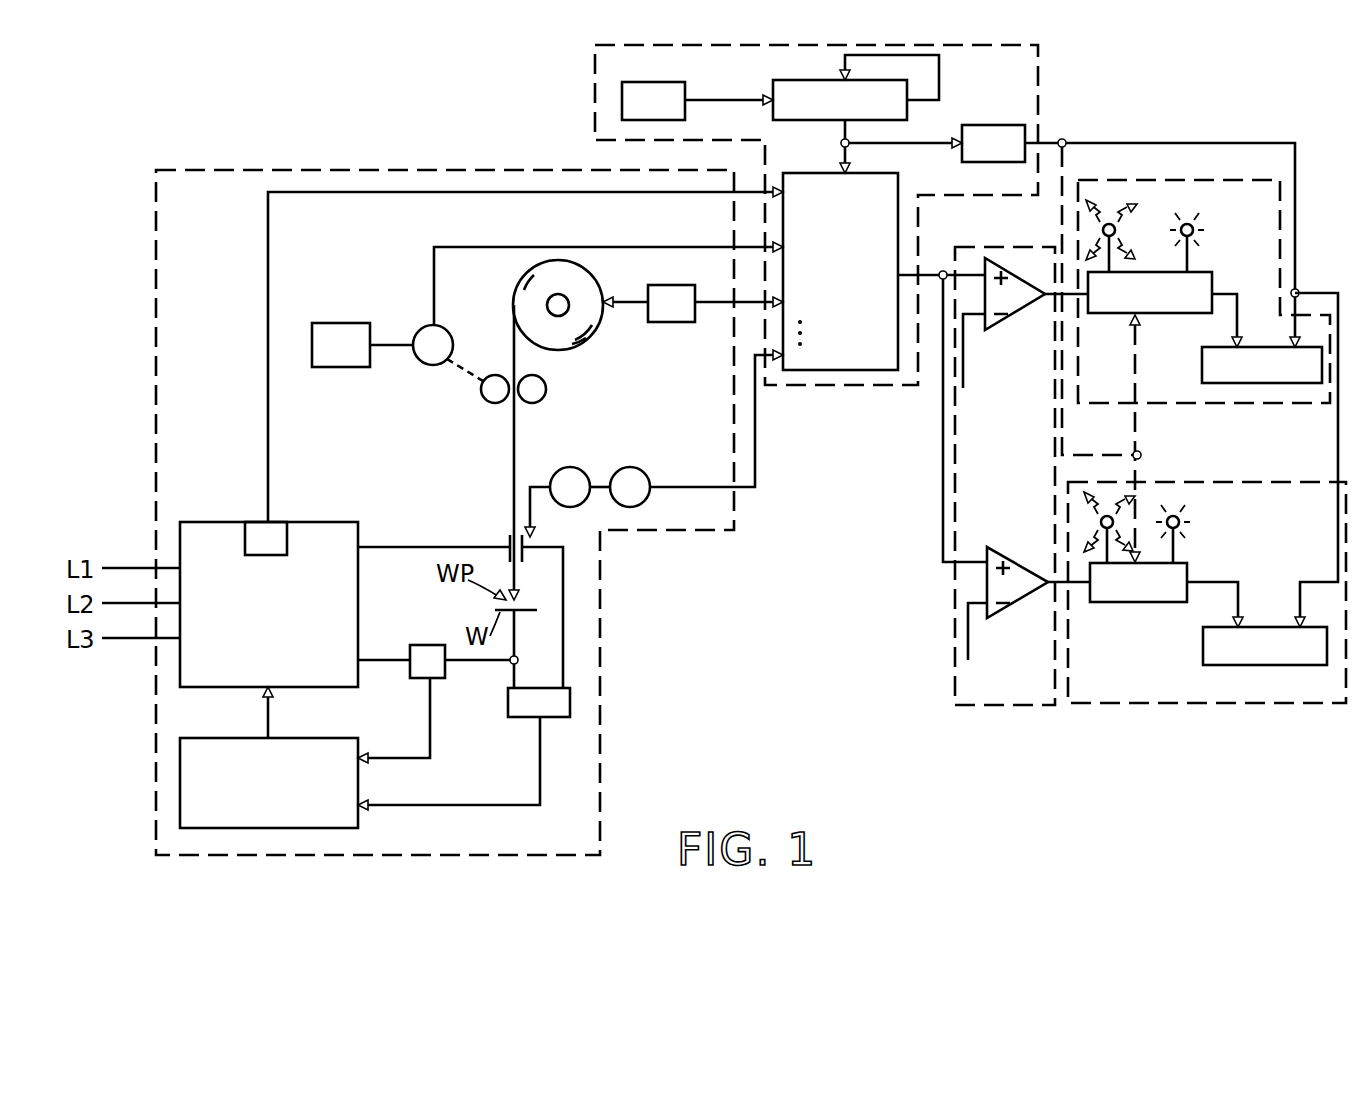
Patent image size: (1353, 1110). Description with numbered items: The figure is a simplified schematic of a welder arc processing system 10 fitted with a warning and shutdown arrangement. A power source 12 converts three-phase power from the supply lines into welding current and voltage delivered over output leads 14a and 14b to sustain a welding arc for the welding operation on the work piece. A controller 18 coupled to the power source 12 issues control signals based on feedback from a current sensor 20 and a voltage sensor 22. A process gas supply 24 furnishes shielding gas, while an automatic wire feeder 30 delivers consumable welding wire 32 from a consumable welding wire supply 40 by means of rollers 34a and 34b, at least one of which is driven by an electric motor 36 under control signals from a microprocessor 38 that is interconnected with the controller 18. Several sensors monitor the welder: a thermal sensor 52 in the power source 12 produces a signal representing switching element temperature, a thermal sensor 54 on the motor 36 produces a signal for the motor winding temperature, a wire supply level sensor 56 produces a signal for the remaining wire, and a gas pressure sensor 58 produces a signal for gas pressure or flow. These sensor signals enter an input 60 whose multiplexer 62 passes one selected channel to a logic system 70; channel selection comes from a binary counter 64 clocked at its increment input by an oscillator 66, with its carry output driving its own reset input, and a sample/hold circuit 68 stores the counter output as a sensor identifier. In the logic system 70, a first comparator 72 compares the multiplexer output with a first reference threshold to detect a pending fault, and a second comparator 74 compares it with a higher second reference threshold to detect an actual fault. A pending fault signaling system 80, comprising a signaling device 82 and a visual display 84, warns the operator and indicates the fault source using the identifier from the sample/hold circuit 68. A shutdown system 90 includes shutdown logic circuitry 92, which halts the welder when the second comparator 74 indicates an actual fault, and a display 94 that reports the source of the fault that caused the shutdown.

The welder arc processing system 10 is at (228, 170).
The power source 12 is at (216, 522).
The output lead 14a is at (380, 547).
The output lead 14b is at (390, 660).
The controller 18 is at (296, 738).
The current sensor 20 is at (418, 678).
The voltage sensor 22 is at (522, 717).
The process gas supply 24 is at (566, 467).
The automatic wire feeder 30 is at (368, 263).
The welding wire 32 is at (512, 505).
The roller 34a is at (484, 399).
The roller 34b is at (544, 396).
The electric motor 36 is at (423, 363).
The microprocessor 38 is at (348, 323).
The consumable welding wire supply 40 is at (585, 340).
The thermal sensor 52 is at (287, 540).
The thermal sensor 54 is at (410, 302).
The wire supply level sensor 56 is at (688, 322).
The gas pressure sensor 58 is at (628, 467).
The input 60 is at (595, 95).
The multiplexer 62 is at (846, 370).
The binary counter 64 is at (775, 82).
The oscillator 66 is at (650, 82).
The sample/hold circuit 68 is at (990, 125).
The logic system 70 is at (993, 705).
The first comparator 72 is at (1015, 262).
The second comparator 74 is at (1018, 547).
The pending fault signaling system 80 is at (1200, 180).
The signaling device 82 is at (1197, 272).
The visual display 84 is at (1202, 372).
The shutdown system 90 is at (1215, 703).
The shutdown logic circuitry 92 is at (1190, 565).
The display 94 is at (1203, 650).